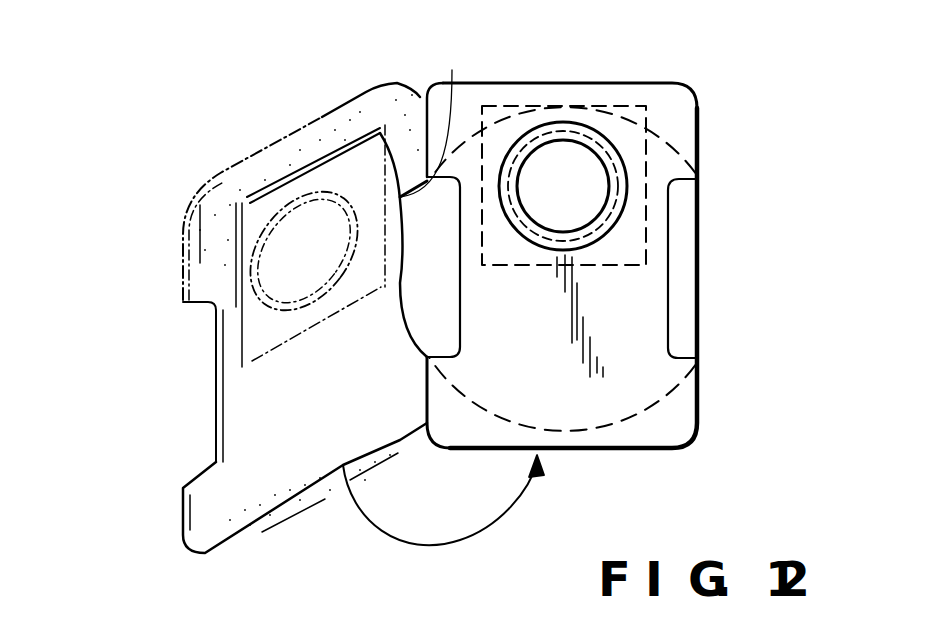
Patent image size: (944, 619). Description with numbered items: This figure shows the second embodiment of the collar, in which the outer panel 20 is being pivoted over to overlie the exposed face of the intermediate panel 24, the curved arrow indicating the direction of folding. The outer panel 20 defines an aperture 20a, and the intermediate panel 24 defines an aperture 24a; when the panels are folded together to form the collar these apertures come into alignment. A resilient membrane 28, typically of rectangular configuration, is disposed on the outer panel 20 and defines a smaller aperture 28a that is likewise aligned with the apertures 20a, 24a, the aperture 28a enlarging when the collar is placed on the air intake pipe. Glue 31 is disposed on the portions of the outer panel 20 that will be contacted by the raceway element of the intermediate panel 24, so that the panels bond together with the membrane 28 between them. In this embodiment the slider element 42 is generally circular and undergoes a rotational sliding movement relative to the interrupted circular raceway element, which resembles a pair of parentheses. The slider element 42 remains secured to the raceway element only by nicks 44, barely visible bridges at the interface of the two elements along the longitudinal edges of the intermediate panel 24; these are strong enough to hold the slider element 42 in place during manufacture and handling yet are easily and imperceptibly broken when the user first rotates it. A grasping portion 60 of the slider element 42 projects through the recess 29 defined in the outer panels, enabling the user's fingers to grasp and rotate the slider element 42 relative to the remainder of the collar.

The outer panel 20 is at (620, 452).
The aperture 20a is at (283, 210).
The intermediate panel 24 is at (860, 0).
The aperture 24a is at (570, 133).
The resilient membrane 28 is at (697, 118).
The aperture 28a is at (577, 170).
The recess 29 is at (697, 245).
The glue 31 is at (193, 210).
The slider element 42 is at (660, 410).
The nicks 44 is at (427, 178).
The grasping portion 60 is at (433, 113).